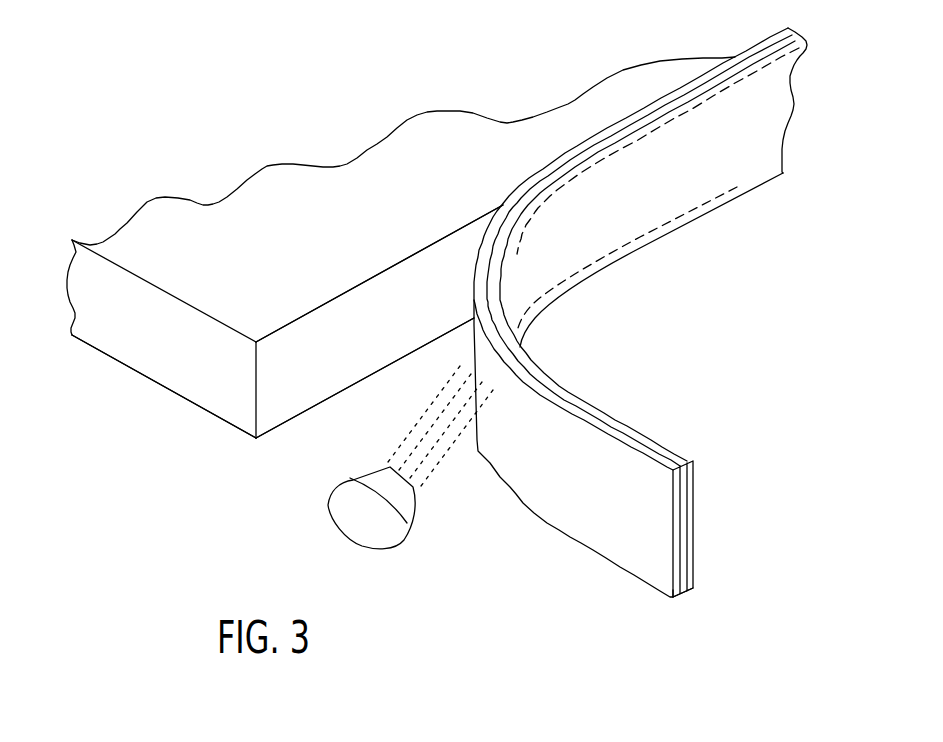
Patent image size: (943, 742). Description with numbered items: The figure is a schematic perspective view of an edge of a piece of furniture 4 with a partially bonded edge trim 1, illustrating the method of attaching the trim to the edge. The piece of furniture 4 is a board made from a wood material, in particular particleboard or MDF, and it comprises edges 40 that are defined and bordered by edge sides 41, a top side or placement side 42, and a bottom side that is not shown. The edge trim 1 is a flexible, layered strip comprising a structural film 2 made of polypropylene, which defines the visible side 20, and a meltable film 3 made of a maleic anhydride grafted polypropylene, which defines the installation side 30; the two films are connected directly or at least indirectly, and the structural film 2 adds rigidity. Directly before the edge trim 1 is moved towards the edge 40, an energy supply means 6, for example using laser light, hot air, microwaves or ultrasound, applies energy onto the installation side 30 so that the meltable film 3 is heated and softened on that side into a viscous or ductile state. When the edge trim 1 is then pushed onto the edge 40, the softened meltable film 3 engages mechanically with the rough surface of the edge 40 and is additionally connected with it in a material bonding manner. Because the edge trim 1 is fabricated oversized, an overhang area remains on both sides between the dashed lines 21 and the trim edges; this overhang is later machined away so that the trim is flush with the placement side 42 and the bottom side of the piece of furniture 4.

The edge trim 1 is at (640, 338).
The structural film 2 is at (694, 508).
The meltable film 3 is at (672, 592).
The piece of furniture 4 is at (401, 273).
The energy supply means 6 is at (391, 552).
The visible side 20 is at (650, 260).
The dashed lines 21 is at (690, 122).
The installation side 30 is at (573, 448).
The edge 40 is at (270, 339).
The edge sides 41 is at (340, 296).
The top side or placement side 42 is at (403, 199).